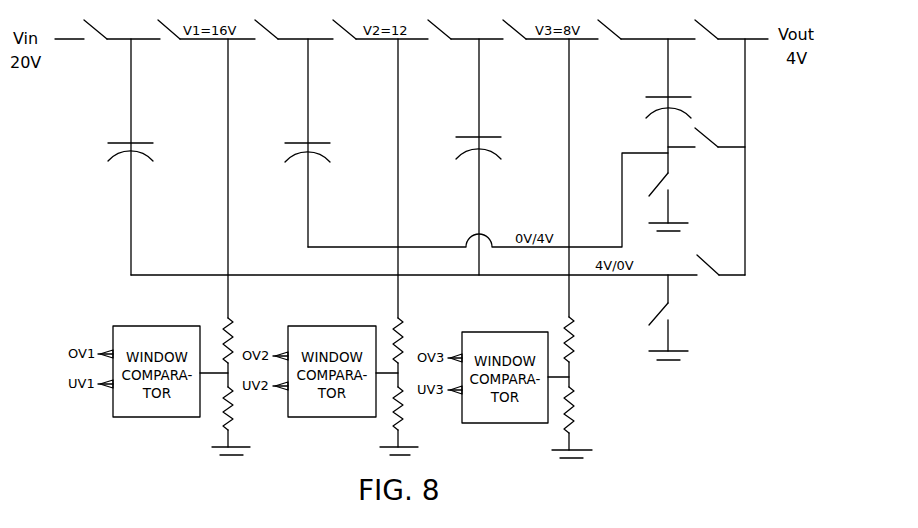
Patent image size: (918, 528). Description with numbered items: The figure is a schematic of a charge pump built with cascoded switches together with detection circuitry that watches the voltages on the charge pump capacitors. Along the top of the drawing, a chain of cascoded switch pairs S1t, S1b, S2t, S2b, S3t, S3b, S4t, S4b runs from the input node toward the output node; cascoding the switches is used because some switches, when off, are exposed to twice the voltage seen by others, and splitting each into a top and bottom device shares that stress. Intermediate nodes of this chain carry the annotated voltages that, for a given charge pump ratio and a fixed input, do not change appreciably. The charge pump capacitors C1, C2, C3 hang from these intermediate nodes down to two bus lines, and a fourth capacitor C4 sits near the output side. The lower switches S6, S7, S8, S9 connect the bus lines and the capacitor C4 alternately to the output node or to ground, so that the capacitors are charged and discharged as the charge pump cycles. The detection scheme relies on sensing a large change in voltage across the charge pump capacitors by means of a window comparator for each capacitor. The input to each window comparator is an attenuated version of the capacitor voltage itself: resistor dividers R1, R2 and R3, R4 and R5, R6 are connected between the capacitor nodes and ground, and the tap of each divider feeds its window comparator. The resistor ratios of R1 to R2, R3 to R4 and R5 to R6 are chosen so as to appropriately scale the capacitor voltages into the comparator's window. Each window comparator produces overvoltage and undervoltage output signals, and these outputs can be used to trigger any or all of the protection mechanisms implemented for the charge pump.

The switch S1t is at (121, 42).
The switch S1b is at (206, 42).
The switch S2t is at (294, 42).
The switch S2b is at (380, 43).
The switch S3t is at (465, 43).
The switch S3b is at (550, 43).
The switch S4t is at (646, 43).
The switch S4b is at (731, 43).
The switch S6 is at (706, 150).
The switch S7 is at (669, 202).
The switch S8 is at (721, 279).
The switch S9 is at (670, 317).
The capacitor C1 is at (141, 152).
The capacitor C2 is at (318, 152).
The capacitor C3 is at (489, 148).
The capacitor C4 is at (682, 107).
The resistor R1 is at (241, 352).
The resistor R2 is at (235, 421).
The resistor R3 is at (410, 352).
The resistor R4 is at (403, 421).
The resistor R5 is at (582, 352).
The resistor R6 is at (578, 422).